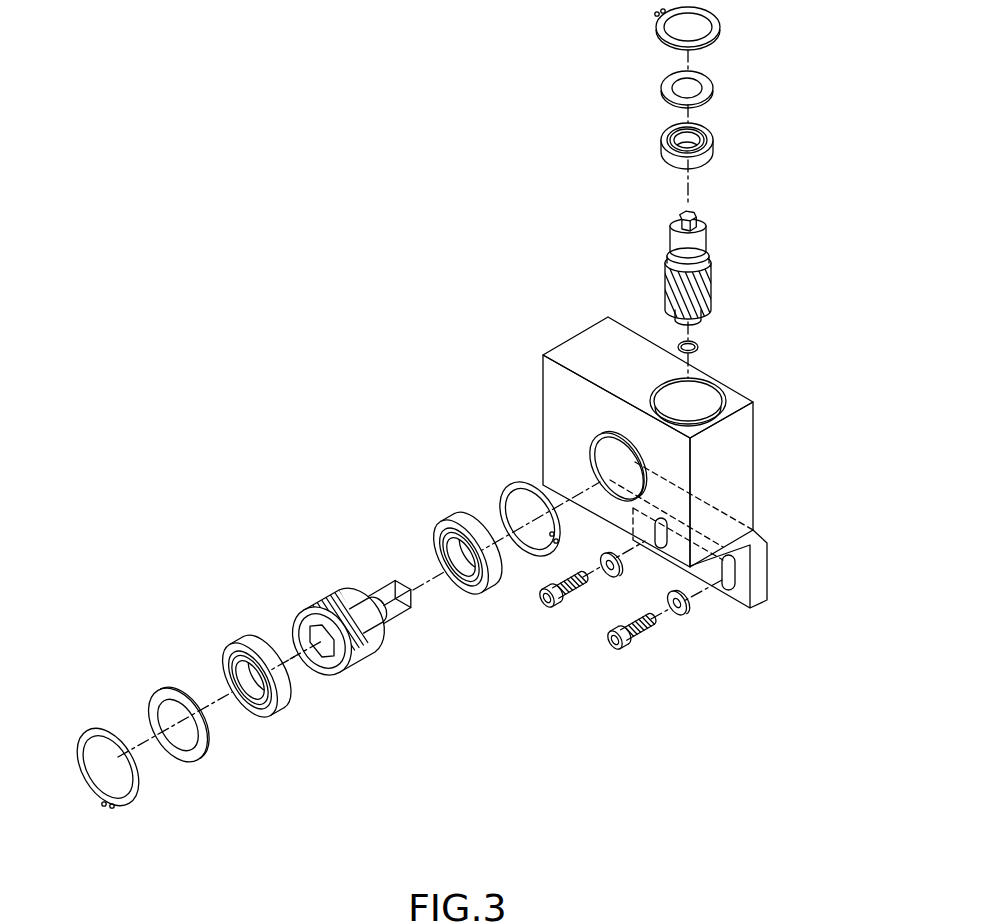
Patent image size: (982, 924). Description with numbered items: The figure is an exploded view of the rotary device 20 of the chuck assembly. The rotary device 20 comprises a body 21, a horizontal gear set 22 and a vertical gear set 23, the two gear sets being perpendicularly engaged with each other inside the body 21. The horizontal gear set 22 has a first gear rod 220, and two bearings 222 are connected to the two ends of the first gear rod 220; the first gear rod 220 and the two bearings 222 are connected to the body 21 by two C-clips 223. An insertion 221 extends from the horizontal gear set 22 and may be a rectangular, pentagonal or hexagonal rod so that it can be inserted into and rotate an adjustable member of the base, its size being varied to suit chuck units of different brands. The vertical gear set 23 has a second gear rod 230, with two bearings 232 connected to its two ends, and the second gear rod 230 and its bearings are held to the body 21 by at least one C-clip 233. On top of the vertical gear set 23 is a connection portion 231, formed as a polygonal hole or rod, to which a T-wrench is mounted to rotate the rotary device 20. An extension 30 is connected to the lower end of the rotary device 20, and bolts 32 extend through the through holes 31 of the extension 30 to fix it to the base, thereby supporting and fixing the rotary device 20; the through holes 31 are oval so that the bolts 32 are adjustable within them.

The rotary device 20 is at (568, 329).
The body 21 is at (753, 452).
The horizontal gear set 22 is at (32, 665).
The first gear rod 220 is at (330, 595).
The insertion 221 is at (398, 586).
The bearings 222 is at (235, 643).
The C-clips 223 is at (100, 733).
The vertical gear set 23 is at (792, 40).
The second gear rod 230 is at (695, 290).
The connection portion 231 is at (690, 218).
The bearings 232 is at (700, 156).
The C-clips 233 is at (722, 39).
The extension 30 is at (761, 616).
The through holes 31 is at (728, 584).
The bolts 32 is at (613, 648).